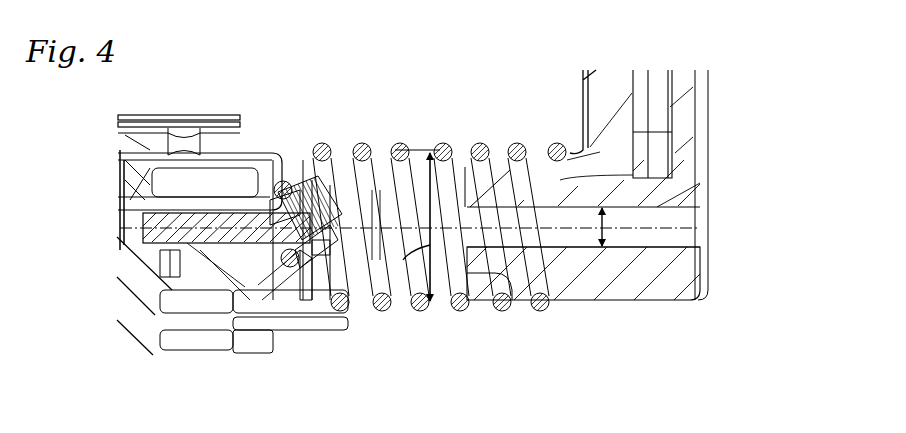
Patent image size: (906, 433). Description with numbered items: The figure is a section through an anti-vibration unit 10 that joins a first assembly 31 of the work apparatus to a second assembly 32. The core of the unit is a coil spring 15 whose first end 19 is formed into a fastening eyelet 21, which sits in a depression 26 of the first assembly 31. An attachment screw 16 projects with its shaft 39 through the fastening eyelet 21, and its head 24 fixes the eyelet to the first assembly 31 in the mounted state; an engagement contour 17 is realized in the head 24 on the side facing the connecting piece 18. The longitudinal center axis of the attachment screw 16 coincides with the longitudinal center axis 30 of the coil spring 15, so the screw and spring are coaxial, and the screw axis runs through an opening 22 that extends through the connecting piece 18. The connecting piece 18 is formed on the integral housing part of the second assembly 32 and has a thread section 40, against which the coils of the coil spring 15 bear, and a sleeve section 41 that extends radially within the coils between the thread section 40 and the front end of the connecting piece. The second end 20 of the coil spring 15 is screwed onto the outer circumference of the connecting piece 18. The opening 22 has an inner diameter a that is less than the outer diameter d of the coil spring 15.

The shaft 39 is at (190, 217).
The first assembly 31 is at (238, 155).
The fastening eyelet 21 is at (289, 186).
The engagement contour 17 is at (343, 207).
The coil spring 15 is at (440, 147).
The thread section 40 is at (535, 167).
The second assembly 32 is at (708, 92).
The inner diameter a is at (605, 231).
The opening 22 is at (663, 230).
The connecting piece 18 is at (530, 277).
The second end 20 is at (542, 317).
The sleeve section 41 is at (477, 268).
The anti-vibration unit 10 is at (462, 318).
The outer diameter d is at (430, 240).
The longitudinal center axis 30 is at (385, 238).
The head 24 is at (313, 270).
The first end 19 is at (285, 272).
The depression 26 is at (282, 267).
The attachment screw 16 is at (223, 230).